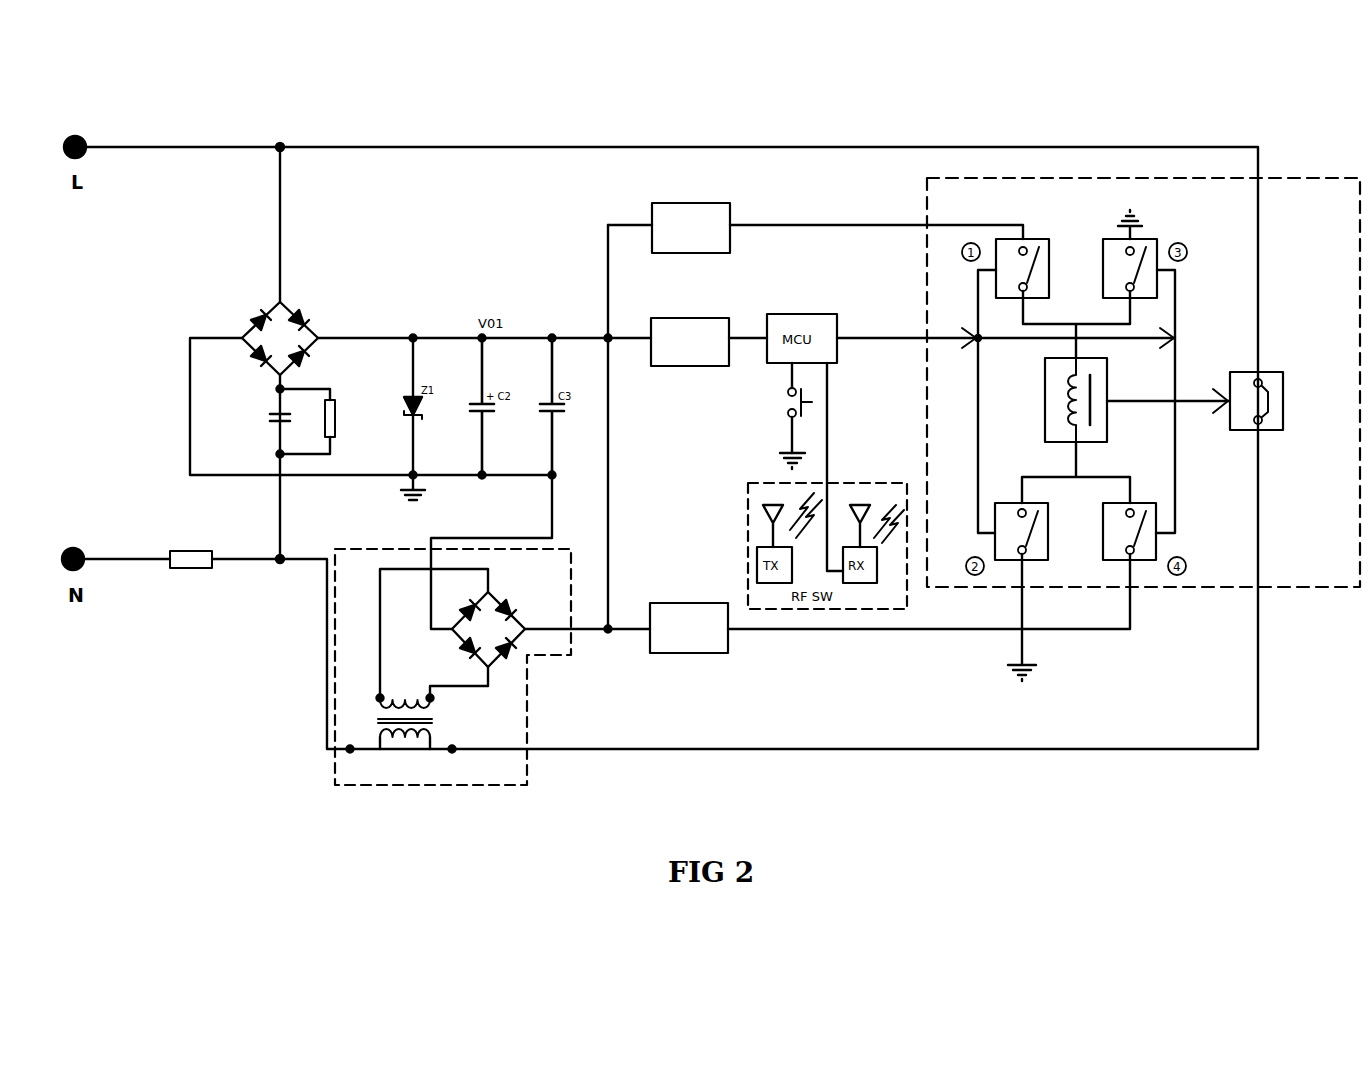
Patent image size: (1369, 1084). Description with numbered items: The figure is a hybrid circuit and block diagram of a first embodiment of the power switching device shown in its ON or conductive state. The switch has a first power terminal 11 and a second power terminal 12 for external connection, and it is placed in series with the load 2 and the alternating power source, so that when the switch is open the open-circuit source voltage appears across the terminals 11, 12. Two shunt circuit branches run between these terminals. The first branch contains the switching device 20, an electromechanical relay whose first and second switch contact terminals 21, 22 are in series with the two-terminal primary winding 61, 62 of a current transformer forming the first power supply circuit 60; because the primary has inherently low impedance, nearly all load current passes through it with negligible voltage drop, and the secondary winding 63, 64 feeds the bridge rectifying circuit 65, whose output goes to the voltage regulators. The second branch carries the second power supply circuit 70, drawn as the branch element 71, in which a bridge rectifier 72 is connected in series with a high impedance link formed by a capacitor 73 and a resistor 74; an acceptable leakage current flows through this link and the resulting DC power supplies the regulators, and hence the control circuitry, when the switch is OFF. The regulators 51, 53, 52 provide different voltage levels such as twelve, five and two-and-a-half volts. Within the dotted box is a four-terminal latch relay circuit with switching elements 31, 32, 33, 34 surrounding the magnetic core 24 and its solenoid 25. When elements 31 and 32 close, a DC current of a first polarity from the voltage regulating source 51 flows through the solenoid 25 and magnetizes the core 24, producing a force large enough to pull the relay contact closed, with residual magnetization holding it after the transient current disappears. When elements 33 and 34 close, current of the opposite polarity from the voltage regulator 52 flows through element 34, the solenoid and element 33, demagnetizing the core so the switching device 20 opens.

The load 2 is at (191, 558).
The first power terminal 11 is at (281, 135).
The second power terminal 12 is at (281, 575).
The switching device 20 is at (1278, 410).
The first switch contact terminal 21 is at (1254, 380).
The second switch contact terminal 22 is at (1254, 424).
The magnetic core 24 is at (1058, 400).
The solenoid 25 is at (1050, 407).
The first switching element 31 is at (998, 268).
The second switching element 32 is at (998, 531).
The third switching element 33 is at (1154, 268).
The fourth switching element 34 is at (1154, 531).
The voltage regulating source 51 is at (691, 243).
The voltage regulator 52 is at (689, 642).
The voltage regulator 53 is at (690, 356).
The first power supply circuit 60 is at (533, 660).
The primary winding terminal 61 is at (453, 762).
The primary winding terminal 62 is at (351, 762).
The secondary winding terminal 63 is at (445, 707).
The secondary winding terminal 64 is at (364, 691).
The bridge rectifying circuit 65 is at (456, 650).
The second power supply circuit 70 is at (270, 316).
The second shunt circuit branch element 71 is at (278, 301).
The bridge rectifier 72 is at (254, 319).
The capacitor 73 is at (258, 422).
The resistor 74 is at (327, 421).